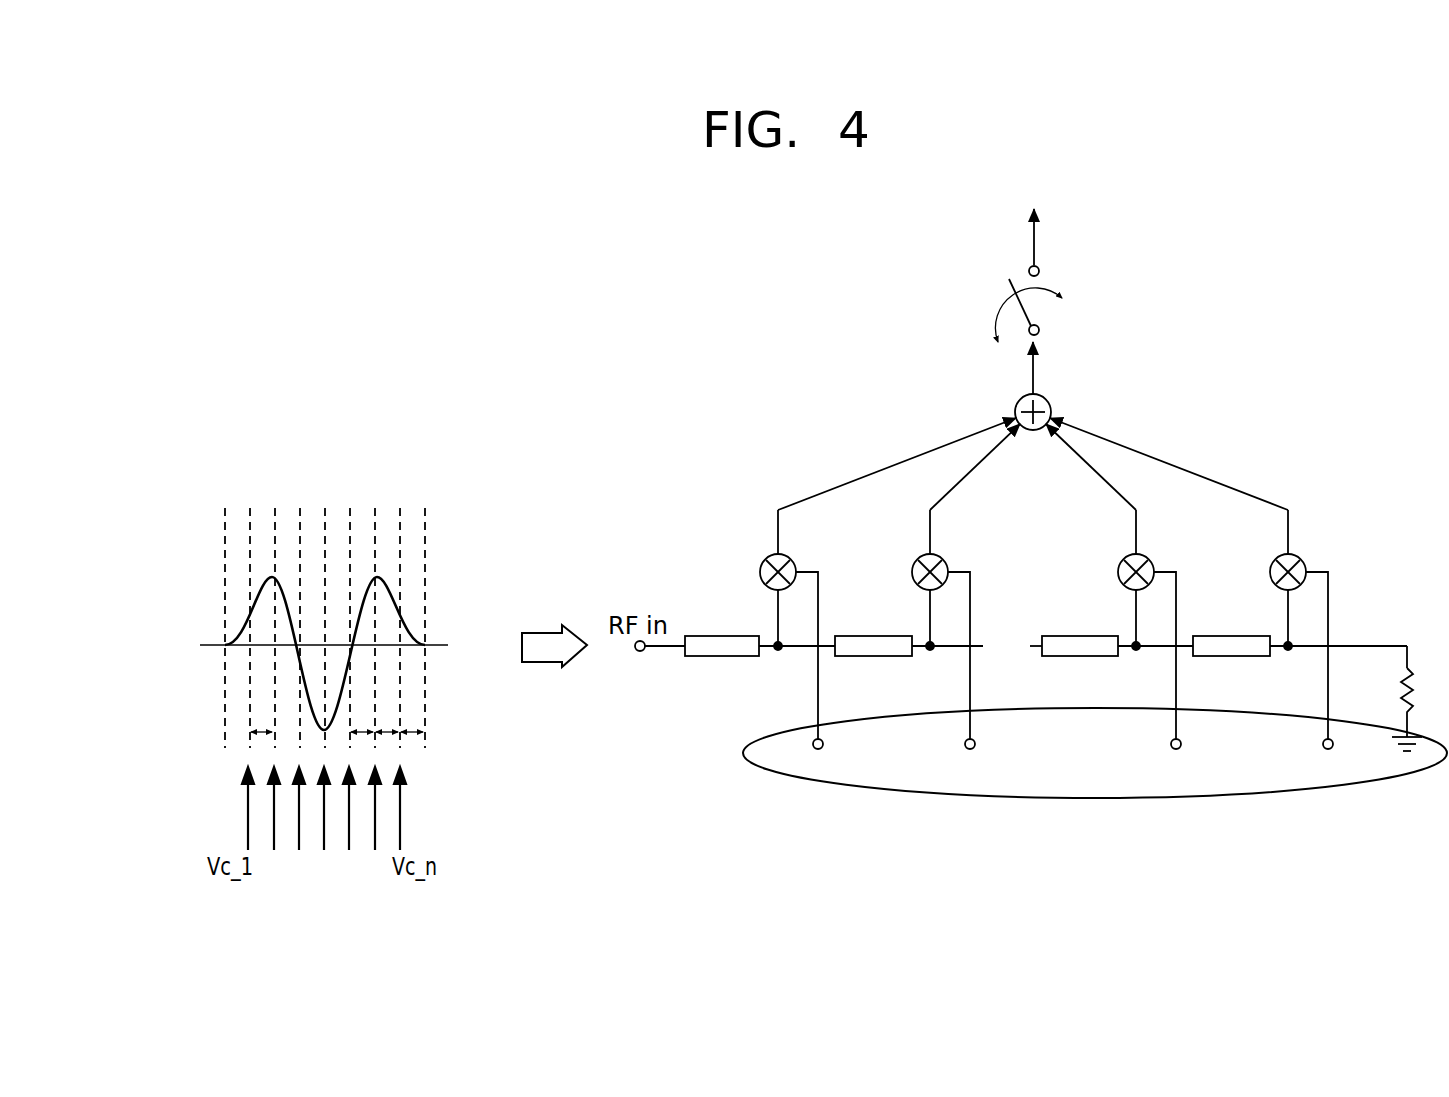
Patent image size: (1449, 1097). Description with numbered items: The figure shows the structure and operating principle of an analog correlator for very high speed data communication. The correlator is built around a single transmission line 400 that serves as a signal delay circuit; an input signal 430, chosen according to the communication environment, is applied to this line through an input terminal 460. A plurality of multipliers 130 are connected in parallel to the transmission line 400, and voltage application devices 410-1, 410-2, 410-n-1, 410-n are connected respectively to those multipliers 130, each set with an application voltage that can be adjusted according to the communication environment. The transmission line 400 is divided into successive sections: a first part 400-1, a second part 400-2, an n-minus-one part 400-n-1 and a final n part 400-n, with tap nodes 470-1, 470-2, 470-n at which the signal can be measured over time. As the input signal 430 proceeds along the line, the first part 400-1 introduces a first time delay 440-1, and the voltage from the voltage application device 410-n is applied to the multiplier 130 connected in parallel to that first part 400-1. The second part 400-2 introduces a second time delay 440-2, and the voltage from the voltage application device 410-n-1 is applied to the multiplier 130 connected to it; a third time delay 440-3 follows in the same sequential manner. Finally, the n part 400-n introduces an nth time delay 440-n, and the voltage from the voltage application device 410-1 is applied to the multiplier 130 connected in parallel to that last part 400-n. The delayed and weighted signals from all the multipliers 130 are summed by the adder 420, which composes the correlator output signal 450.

The multiplier 130 is at (918, 552).
The transmission line 400 is at (665, 650).
The first part of the transmission line 400-1 is at (718, 658).
The second part of the transmission line 400-2 is at (872, 658).
The n-1 part of the transmission line 400-n-1 is at (1078, 658).
The n part of the transmission line 400-n is at (1228, 658).
The voltage application device 410-n is at (813, 750).
The voltage application device 410-n-1 is at (965, 750).
The voltage application device 410-2 is at (1172, 750).
The voltage application device 410-1 is at (1322, 750).
The adder 420 is at (1048, 396).
The input signal 430 is at (167, 543).
The time delay (t1) 440-1 is at (413, 731).
The time delay (t2) 440-2 is at (390, 730).
The time delay (t3) 440-3 is at (361, 728).
The time delay (tn) 440-n is at (260, 731).
The correlator output signal 450 is at (1046, 240).
The input terminal 460 is at (641, 653).
The node 470-1 is at (772, 642).
The node 470-2 is at (924, 642).
The node 470-n is at (1292, 642).